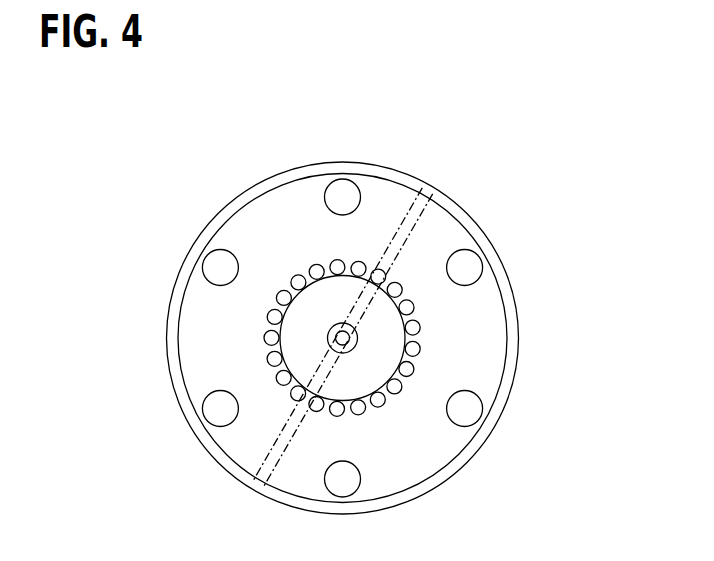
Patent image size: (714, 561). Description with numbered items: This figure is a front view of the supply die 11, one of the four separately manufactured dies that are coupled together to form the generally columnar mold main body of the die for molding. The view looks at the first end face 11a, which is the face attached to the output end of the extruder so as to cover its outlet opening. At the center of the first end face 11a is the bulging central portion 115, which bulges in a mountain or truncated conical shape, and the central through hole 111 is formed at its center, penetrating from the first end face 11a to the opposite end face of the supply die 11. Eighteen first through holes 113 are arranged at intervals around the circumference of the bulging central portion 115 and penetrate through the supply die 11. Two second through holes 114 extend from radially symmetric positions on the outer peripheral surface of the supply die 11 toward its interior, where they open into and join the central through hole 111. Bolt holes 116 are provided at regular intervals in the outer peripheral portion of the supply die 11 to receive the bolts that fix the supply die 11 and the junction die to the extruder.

The supply die 11 is at (254, 184).
The first end face 11a is at (252, 228).
The central through hole 111 is at (348, 339).
The first through holes 113 is at (316, 272).
The second through holes 114 is at (416, 227).
The bulging central portion 115 is at (388, 317).
The bolt holes 116 is at (217, 267).